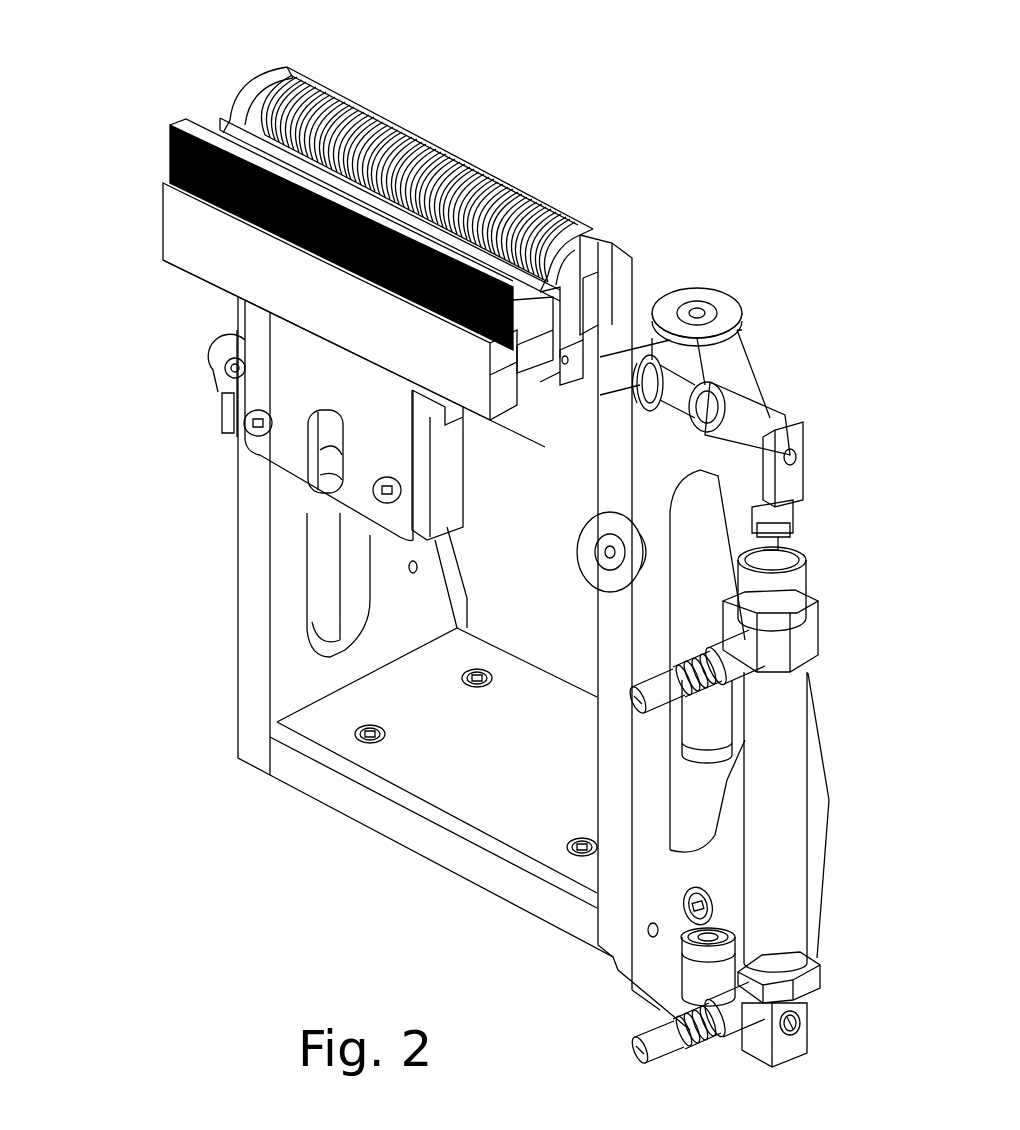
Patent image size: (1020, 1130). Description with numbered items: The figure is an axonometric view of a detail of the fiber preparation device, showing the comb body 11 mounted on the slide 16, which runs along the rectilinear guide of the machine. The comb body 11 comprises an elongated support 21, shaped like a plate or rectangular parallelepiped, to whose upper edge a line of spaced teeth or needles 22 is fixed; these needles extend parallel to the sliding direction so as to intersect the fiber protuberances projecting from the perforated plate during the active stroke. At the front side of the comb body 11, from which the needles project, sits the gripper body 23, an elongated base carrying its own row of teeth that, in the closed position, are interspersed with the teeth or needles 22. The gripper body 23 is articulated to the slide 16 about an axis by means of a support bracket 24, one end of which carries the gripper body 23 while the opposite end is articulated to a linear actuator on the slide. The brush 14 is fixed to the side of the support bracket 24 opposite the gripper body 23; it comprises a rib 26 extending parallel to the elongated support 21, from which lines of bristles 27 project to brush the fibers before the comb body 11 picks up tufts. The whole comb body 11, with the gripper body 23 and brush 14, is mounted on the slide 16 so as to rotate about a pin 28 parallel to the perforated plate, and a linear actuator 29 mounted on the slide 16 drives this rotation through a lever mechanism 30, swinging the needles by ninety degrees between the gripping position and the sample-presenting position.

The comb body 11 is at (415, 193).
The brush 14 is at (167, 143).
The slide 16 is at (250, 733).
The elongated support 21 is at (605, 293).
The teeth or needles 22 is at (350, 103).
The gripper body 23 is at (247, 93).
The support bracket 24 is at (286, 100).
The rib 26 is at (180, 212).
The bristles 27 is at (170, 163).
The pin 28 is at (730, 420).
The linear actuator 29 is at (790, 767).
The lever mechanism 30 is at (797, 492).